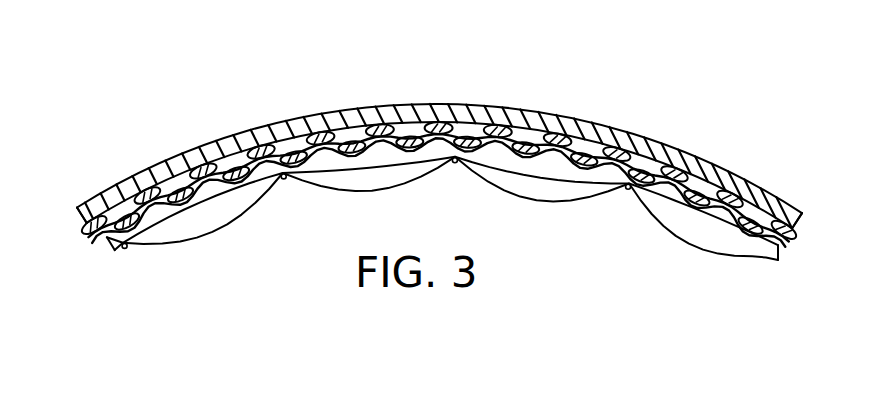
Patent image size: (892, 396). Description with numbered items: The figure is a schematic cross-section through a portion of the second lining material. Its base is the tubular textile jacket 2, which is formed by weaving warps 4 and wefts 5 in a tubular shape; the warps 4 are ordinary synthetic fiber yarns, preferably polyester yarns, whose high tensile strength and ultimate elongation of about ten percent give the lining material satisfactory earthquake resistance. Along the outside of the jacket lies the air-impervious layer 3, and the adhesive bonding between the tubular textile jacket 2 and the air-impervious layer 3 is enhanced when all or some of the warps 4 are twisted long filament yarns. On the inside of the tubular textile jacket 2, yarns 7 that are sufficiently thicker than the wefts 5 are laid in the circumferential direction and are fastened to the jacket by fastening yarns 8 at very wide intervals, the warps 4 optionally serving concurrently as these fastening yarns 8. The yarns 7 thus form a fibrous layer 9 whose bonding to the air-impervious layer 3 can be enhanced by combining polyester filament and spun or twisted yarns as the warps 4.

The tubular textile jacket 2 is at (62, 243).
The air-impervious layer 3 is at (594, 128).
The warps 4 is at (382, 115).
The wefts 5 is at (529, 133).
The yarns 7 is at (229, 213).
The fastening yarns 8 is at (126, 249).
The fibrous layer 9 is at (809, 243).